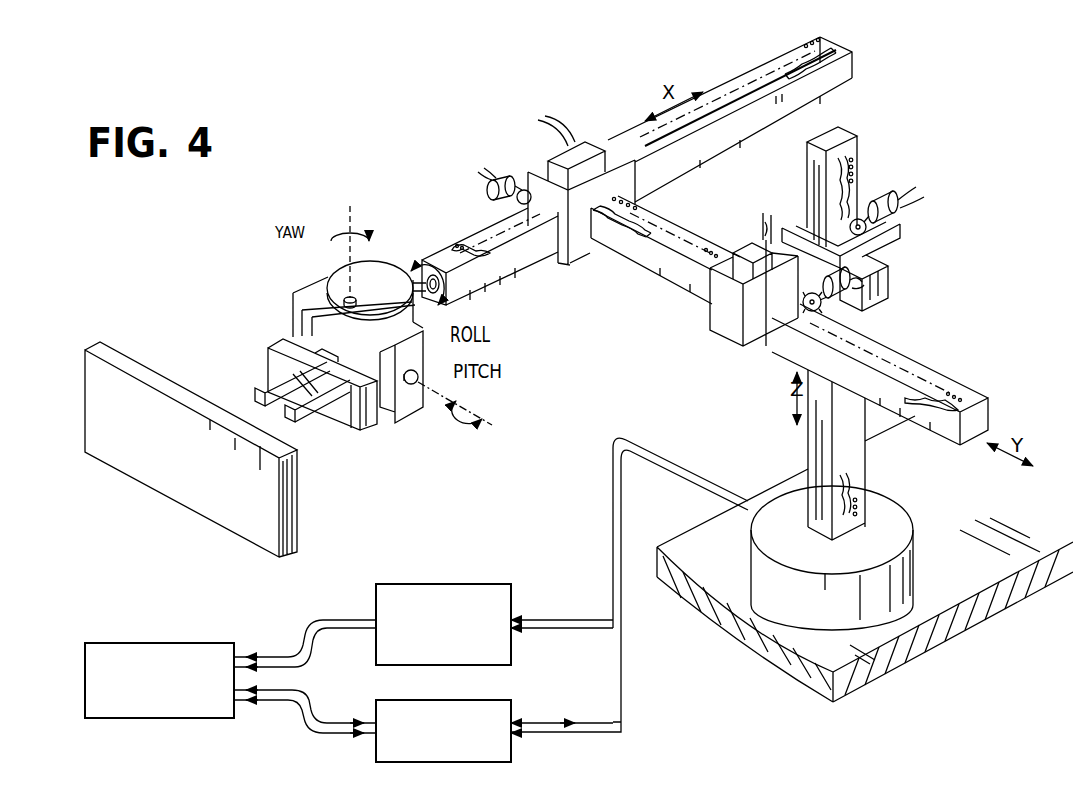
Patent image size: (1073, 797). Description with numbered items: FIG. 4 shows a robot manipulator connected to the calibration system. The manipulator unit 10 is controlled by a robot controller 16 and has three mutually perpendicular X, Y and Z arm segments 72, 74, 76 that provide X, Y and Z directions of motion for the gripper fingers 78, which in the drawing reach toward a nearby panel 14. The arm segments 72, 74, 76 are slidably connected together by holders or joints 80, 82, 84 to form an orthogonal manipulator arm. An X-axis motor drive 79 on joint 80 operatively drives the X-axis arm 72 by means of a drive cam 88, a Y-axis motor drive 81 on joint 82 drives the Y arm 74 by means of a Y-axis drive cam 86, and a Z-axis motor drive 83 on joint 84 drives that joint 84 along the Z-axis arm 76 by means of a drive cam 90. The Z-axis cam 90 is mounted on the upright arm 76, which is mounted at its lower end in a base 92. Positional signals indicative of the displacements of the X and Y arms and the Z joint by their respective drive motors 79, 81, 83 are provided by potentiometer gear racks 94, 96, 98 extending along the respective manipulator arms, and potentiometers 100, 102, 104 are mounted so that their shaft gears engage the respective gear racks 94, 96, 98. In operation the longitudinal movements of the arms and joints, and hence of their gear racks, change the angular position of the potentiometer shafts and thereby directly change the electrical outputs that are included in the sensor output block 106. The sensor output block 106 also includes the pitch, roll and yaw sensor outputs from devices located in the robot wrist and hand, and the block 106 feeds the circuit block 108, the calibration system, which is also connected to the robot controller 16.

The manipulator unit 10 is at (602, 398).
The target panel 14 is at (102, 348).
The robot controller 16 is at (388, 700).
The X arm segment 72 is at (510, 257).
The Y arm segment 74 is at (665, 272).
The Z arm segment 76 is at (817, 443).
The gripper fingers 78 is at (253, 397).
The X-axis motor drive 79 is at (588, 147).
The joint 80 is at (547, 175).
The Y-axis motor drive 81 is at (743, 247).
The joint 82 is at (720, 317).
The Z-axis motor drive 83 is at (889, 286).
The joint 84 is at (877, 248).
The Y-axis drive cam 86 is at (634, 230).
The drive cam 88 is at (830, 55).
The Z-axis drive cam 90 is at (837, 171).
The base 92 is at (752, 558).
The potentiometer gear rack 94 is at (442, 245).
The potentiometer gear rack 96 is at (747, 352).
The potentiometer gear rack 98 is at (854, 143).
The potentiometer 100 is at (488, 187).
The potentiometer 102 is at (870, 316).
The potentiometer 104 is at (883, 193).
The sensor output block 106 is at (442, 583).
The calibration system 108 is at (162, 642).